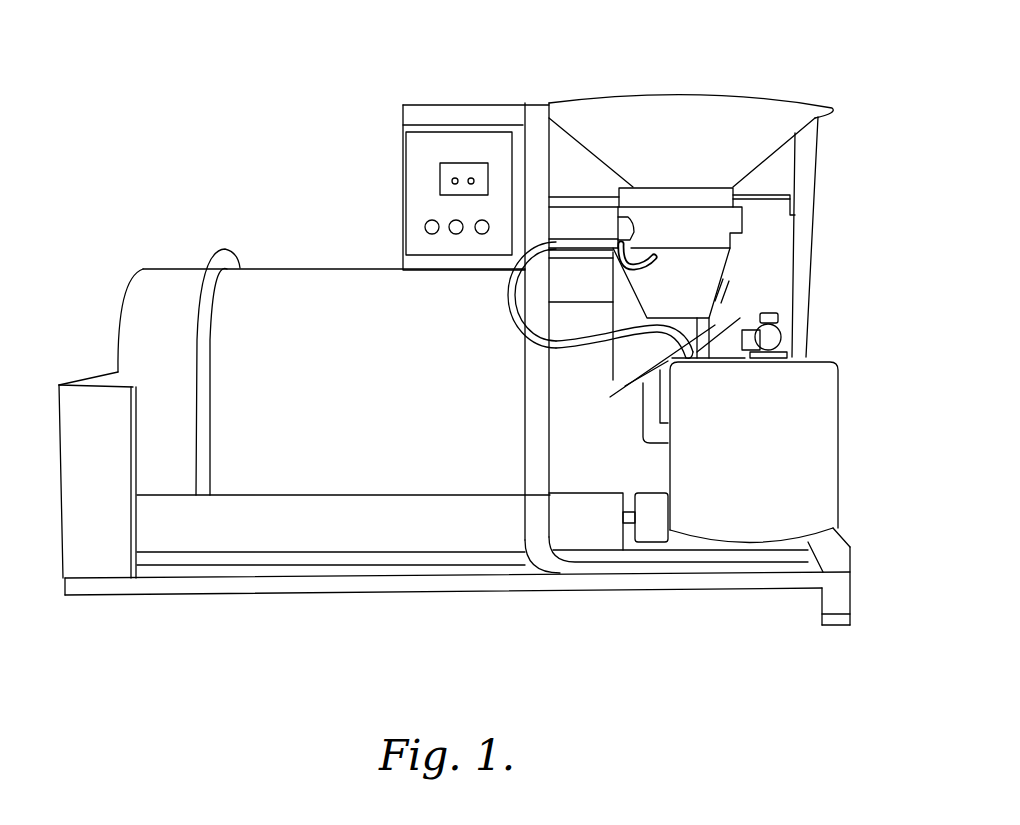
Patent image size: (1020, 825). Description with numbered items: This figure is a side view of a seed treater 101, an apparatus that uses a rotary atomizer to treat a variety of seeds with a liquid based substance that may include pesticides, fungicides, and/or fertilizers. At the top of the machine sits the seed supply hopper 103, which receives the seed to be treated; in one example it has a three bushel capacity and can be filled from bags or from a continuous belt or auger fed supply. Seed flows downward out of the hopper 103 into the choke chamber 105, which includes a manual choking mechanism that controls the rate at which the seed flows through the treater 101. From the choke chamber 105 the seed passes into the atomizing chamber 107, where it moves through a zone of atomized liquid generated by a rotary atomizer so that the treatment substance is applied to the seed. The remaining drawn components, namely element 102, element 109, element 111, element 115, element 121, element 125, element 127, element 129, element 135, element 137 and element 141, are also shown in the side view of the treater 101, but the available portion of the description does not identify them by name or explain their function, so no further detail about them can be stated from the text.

The seed treater 101 is at (725, 62).
The frame 102 is at (838, 560).
The seed supply hopper 103 is at (817, 113).
The choke chamber 105 is at (733, 222).
The atomizing chamber 107 is at (708, 277).
The hose 109 is at (627, 380).
The pipe 111 is at (655, 433).
The drum 115 is at (353, 478).
The control panel 121 is at (410, 172).
The support 125 is at (570, 223).
The motor housing 127 is at (568, 287).
The tank 129 is at (825, 425).
The pump 135 is at (787, 342).
The valve box 137 is at (653, 530).
The post 141 is at (533, 112).